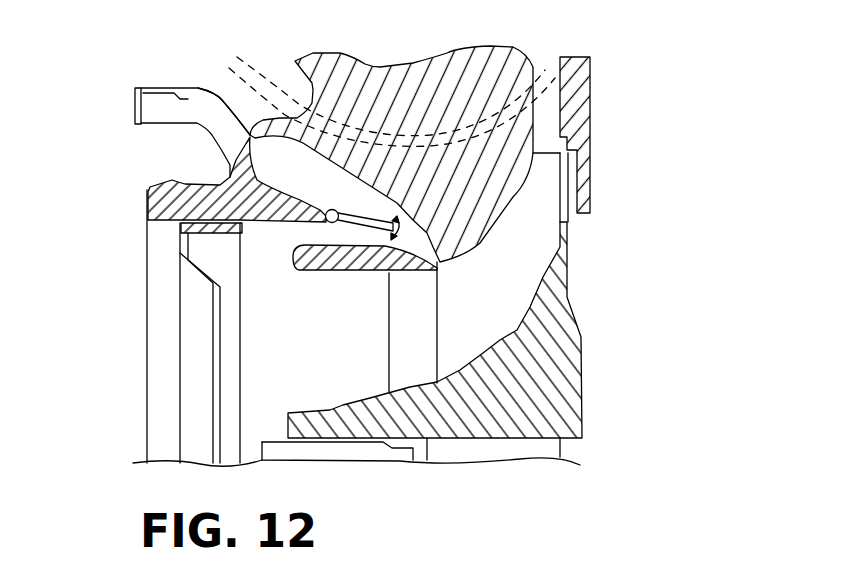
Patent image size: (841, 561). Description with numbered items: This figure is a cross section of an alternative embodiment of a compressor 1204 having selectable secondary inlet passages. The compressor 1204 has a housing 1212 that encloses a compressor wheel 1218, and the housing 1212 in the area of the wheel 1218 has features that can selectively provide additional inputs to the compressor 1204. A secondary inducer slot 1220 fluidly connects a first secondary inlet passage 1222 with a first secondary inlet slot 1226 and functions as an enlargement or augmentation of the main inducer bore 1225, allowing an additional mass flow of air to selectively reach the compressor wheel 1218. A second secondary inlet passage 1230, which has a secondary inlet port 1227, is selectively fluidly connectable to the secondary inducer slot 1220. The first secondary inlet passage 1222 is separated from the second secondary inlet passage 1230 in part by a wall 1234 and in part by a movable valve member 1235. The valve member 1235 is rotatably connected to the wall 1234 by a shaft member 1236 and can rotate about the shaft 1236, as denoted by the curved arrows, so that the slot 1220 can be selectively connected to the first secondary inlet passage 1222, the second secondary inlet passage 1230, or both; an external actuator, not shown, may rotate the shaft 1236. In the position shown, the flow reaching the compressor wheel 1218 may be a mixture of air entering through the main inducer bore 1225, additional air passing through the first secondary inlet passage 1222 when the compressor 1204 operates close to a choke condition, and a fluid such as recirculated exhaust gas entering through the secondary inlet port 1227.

The compressor 1204 is at (147, 420).
The housing 1212 is at (467, 165).
The compressor wheel 1218 is at (552, 409).
The secondary inducer slot 1220 is at (437, 275).
The first secondary inlet passage 1222 is at (350, 237).
The main inducer bore 1225 is at (320, 273).
The first secondary inlet slot 1226 is at (258, 273).
The secondary inlet port 1227 is at (134, 110).
The second secondary inlet passage 1230 is at (358, 188).
The wall 1234 is at (230, 177).
The valve member 1235 is at (358, 189).
The shaft member 1236 is at (326, 222).